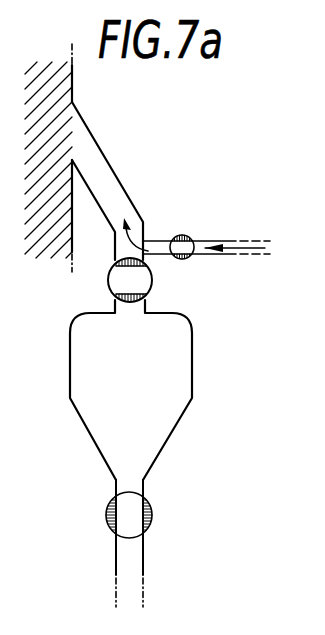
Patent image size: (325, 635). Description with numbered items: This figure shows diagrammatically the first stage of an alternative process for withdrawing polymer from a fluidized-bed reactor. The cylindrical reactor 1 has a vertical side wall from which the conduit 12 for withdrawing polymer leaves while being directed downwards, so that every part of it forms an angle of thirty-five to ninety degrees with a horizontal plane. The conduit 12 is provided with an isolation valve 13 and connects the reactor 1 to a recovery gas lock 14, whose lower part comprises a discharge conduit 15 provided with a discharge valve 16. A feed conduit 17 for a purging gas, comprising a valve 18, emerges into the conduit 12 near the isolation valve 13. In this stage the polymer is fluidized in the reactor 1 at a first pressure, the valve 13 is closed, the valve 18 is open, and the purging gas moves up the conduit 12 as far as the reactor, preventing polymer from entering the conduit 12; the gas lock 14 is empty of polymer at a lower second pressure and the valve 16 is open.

The cylindrical reactor 1 is at (75, 86).
The conduit for withdrawing polymer 12 is at (112, 158).
The isolation valve 13 is at (153, 283).
The recovery gas lock 14 is at (186, 320).
The discharge conduit 15 is at (145, 557).
The discharge valve 16 is at (153, 513).
The feed conduit for purging gas 17 is at (217, 238).
The valve for interrupting the purging 18 is at (182, 235).